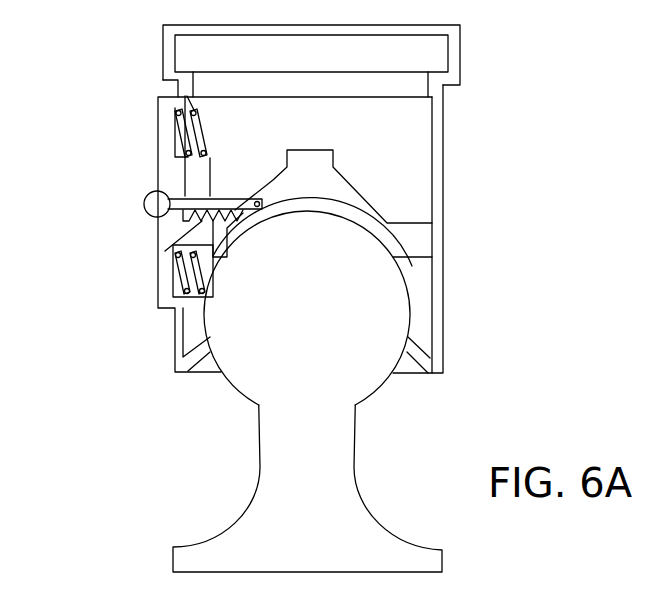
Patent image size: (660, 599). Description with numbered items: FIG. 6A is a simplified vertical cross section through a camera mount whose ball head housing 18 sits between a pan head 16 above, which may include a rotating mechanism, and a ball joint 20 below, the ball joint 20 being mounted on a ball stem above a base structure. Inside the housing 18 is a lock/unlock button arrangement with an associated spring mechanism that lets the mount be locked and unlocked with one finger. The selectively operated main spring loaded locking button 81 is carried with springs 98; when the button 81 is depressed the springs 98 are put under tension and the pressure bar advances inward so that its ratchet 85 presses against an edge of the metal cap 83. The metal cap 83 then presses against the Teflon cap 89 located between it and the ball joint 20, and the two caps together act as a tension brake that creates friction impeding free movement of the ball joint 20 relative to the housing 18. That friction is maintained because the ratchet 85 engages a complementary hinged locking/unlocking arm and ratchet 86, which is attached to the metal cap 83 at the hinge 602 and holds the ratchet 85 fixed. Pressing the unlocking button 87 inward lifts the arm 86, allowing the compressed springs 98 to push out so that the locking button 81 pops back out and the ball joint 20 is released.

The pan head 16 is at (460, 43).
The ball head housing 18 is at (445, 140).
The ball joint 20 is at (367, 387).
The hinge 602 is at (275, 208).
The metal cap 83 is at (415, 237).
The cap 89 is at (428, 258).
The unlocking button 87 is at (150, 205).
The hinged locking/unlocking arm and ratchet 86 is at (214, 203).
The ratchet 85 is at (160, 255).
The main spring loaded locking button 81 is at (160, 155).
The springs 98 is at (175, 128).